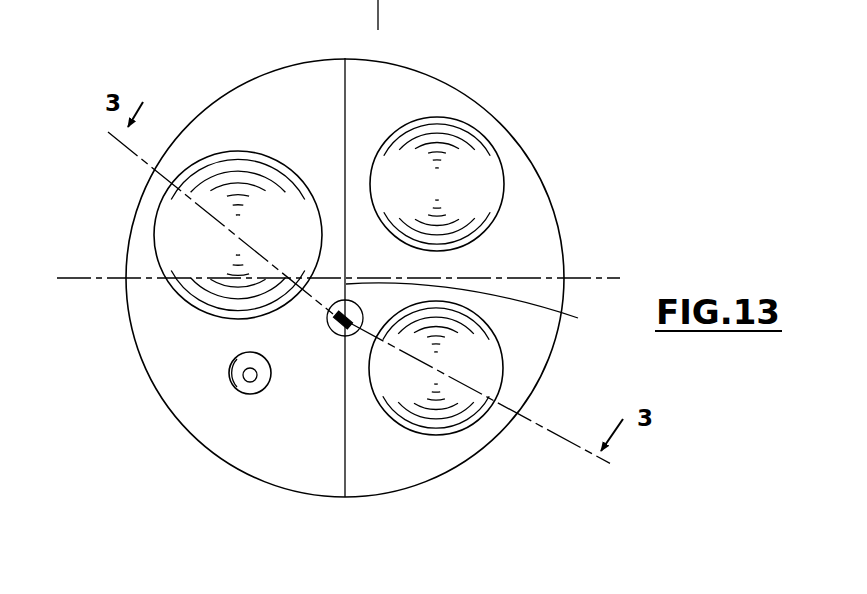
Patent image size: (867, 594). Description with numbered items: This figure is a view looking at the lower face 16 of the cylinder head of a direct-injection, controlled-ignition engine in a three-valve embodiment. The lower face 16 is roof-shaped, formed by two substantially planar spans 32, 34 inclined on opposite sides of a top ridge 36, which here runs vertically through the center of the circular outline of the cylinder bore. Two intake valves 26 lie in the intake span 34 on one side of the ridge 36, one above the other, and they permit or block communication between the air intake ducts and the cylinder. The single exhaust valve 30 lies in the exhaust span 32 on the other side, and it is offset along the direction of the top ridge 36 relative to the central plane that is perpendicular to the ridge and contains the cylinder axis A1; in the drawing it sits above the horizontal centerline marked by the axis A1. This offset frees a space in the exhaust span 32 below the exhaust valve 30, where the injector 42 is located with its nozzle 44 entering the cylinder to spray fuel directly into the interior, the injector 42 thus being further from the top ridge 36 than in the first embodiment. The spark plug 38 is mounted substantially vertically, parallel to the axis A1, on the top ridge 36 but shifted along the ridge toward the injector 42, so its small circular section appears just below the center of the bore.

The lower face 16 is at (268, 124).
The span 32 is at (309, 96).
The top ridge 36 is at (346, 85).
The span 34 is at (413, 93).
The exhaust valve 30 is at (183, 242).
The intake valves 26 is at (477, 177).
The axis A1 is at (479, 311).
The injector 42 is at (237, 372).
The nozzle 44 is at (250, 382).
The spark plug 38 is at (333, 334).